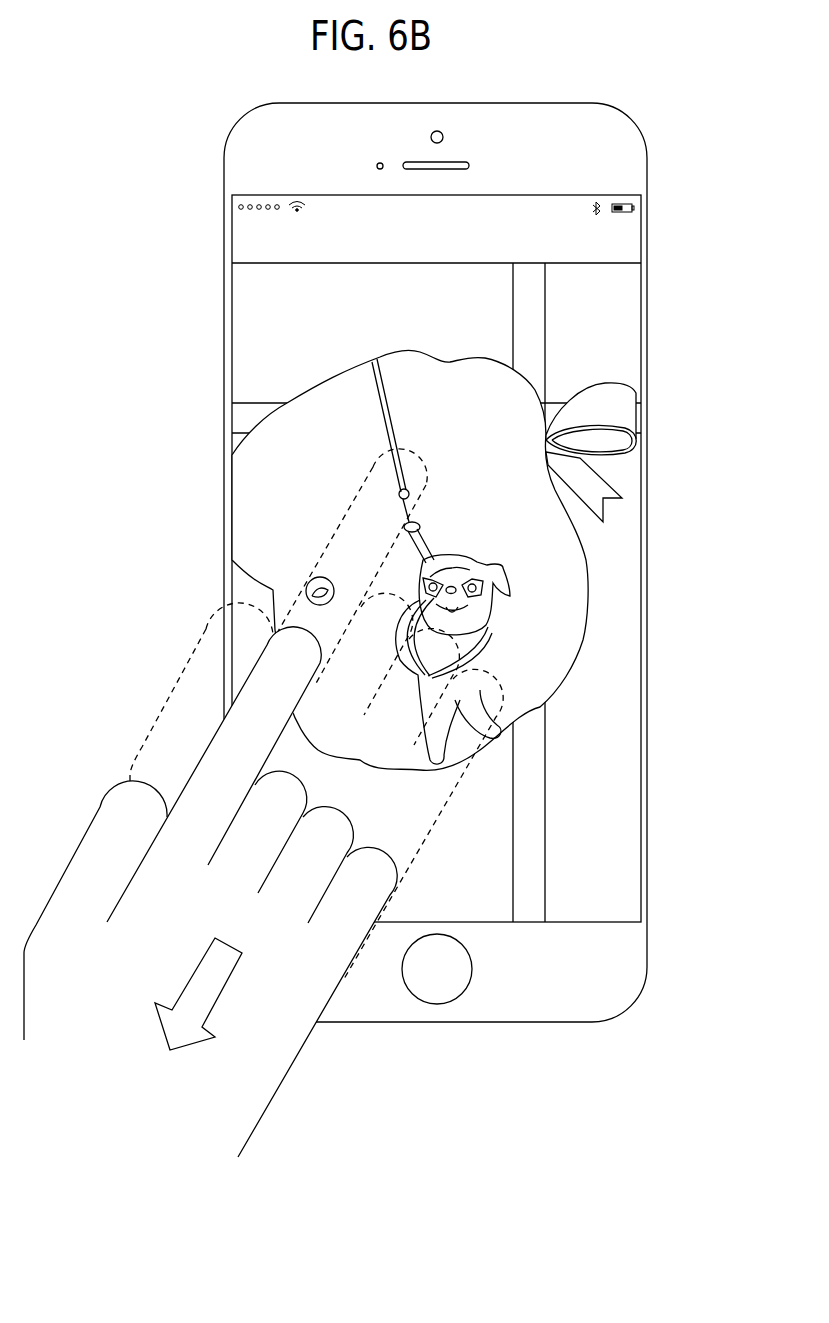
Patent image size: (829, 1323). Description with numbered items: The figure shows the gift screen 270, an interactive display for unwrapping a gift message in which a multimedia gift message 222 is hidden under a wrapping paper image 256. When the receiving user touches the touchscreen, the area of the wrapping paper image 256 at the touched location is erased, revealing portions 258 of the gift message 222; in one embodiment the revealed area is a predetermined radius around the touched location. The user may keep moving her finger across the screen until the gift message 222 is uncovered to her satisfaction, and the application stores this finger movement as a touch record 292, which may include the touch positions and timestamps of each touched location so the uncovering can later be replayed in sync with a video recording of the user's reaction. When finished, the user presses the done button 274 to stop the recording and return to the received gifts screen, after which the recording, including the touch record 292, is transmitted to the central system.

The gift screen 270 is at (627, 84).
The done button 274 is at (643, 250).
The multimedia gift message 222 is at (247, 470).
The revealed portions of the gift message 258 is at (247, 497).
The touch record 292 is at (542, 597).
The wrapping paper image 256 is at (573, 775).